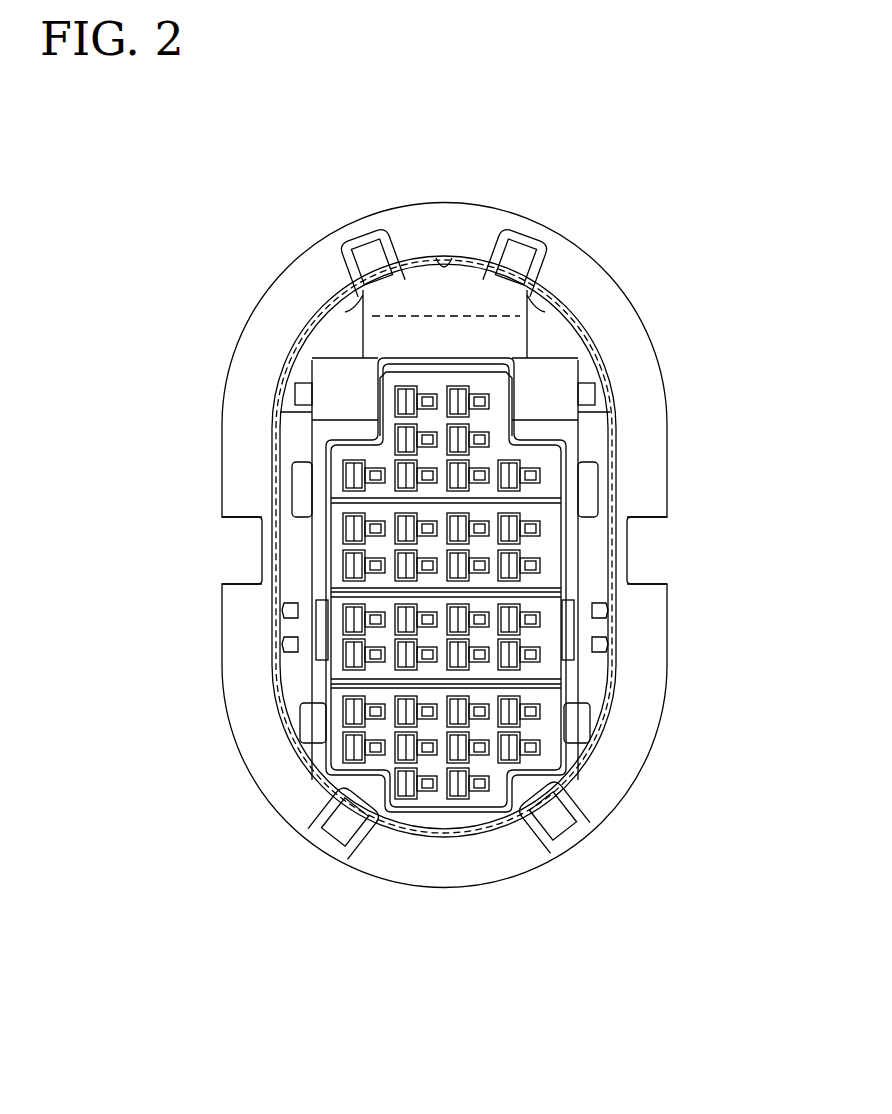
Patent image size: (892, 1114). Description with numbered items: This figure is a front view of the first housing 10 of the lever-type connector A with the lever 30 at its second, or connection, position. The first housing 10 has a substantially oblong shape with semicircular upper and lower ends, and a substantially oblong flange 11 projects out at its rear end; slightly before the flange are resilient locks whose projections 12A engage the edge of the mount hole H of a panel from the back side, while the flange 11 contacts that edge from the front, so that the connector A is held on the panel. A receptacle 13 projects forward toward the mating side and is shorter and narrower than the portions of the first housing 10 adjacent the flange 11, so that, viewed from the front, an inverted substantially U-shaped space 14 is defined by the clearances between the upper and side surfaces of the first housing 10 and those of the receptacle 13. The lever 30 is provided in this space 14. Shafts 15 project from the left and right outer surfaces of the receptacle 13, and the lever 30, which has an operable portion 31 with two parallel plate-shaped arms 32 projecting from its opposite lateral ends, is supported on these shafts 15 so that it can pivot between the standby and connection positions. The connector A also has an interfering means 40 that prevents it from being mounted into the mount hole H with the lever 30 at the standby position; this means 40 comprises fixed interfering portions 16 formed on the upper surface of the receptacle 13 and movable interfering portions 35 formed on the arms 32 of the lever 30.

The first housing 10 is at (612, 387).
The flange 11 is at (613, 308).
The projections 12A is at (518, 262).
The receptacle 13 is at (566, 458).
The space 14 is at (556, 320).
The shafts 15 is at (585, 608).
The fixed interfering portions 16 is at (392, 335).
The lever 30 is at (314, 302).
The operable portion 31 is at (472, 290).
The arms 32 is at (290, 497).
The movable interfering portions 35 is at (303, 762).
The interfering means 40 is at (443, 492).
The mount hole H is at (443, 258).
The lever-type connector A is at (630, 178).